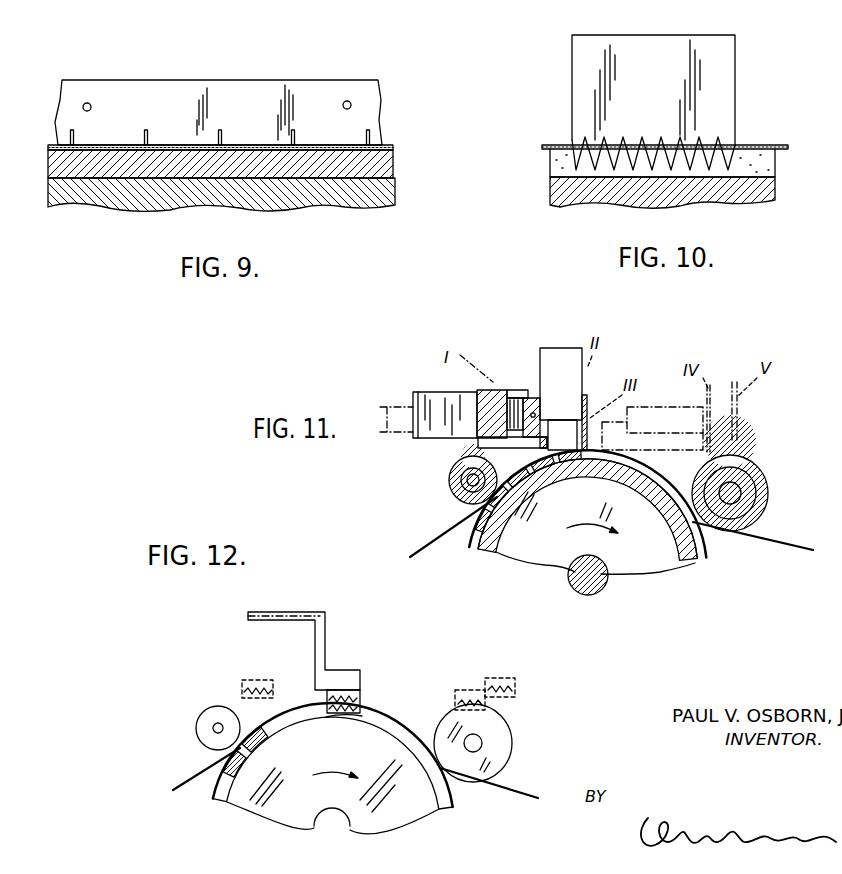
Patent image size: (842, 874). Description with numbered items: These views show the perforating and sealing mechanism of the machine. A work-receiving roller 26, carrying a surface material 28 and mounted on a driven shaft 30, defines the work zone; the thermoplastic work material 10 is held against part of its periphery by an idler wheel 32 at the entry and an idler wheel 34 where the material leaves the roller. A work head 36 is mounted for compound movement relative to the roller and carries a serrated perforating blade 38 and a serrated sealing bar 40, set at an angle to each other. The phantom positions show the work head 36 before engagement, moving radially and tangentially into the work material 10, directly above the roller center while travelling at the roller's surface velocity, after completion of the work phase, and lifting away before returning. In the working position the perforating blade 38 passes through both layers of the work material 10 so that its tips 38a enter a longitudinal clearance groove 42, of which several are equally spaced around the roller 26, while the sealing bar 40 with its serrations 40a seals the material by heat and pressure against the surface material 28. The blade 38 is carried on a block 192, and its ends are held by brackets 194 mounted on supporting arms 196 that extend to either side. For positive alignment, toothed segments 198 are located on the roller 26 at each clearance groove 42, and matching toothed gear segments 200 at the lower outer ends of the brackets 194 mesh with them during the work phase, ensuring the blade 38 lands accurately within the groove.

In FIG. 9, the work material 10 is at (393, 146).
In FIG. 10, the work material 10 is at (785, 145).
In FIG. 11, the work material 10 is at (415, 551).
In FIG. 12, the work material 10 is at (527, 795).
In FIG. 9, the work-receiving roller 26 is at (163, 217).
In FIG. 10, the work-receiving roller 26 is at (546, 204).
In FIG. 11, the work-receiving roller 26 is at (489, 553).
In FIG. 12, the work-receiving roller 26 is at (465, 808).
In FIG. 9, the surface material 28 is at (393, 166).
In FIG. 11, the surface material 28 is at (471, 553).
In FIG. 12, the surface material 28 is at (212, 797).
In FIG. 11, the shaft 30 is at (588, 594).
In FIG. 12, the shaft 30 is at (323, 818).
In FIG. 11, the idler wheel 32 is at (463, 503).
In FIG. 12, the idler wheel 32 is at (195, 738).
In FIG. 11, the idler wheel 34 is at (768, 510).
In FIG. 12, the idler wheel 34 is at (507, 752).
In FIG. 11, the work head 36 is at (510, 373).
In FIG. 10, the perforating blade 38 is at (730, 50).
In FIG. 11, the perforating blade 38 is at (588, 418).
In FIG. 10, the tips of the perforating blade 38a is at (727, 158).
In FIG. 9, the sealing bar 40 is at (277, 87).
In FIG. 11, the sealing bar 40 is at (553, 447).
In FIG. 9, the serrations 40a is at (224, 137).
In FIG. 10, the clearance grooves 42 is at (550, 155).
In FIG. 11, the clearance grooves 42 is at (480, 516).
In FIG. 12, the clearance grooves 42 is at (327, 715).
In FIG. 11, the block 192 is at (570, 348).
In FIG. 12, the brackets 194 is at (326, 616).
In FIG. 11, the supporting arms 196 is at (480, 394).
In FIG. 12, the toothed segments 198 is at (338, 715).
In FIG. 12, the toothed gear segments 200 is at (310, 693).